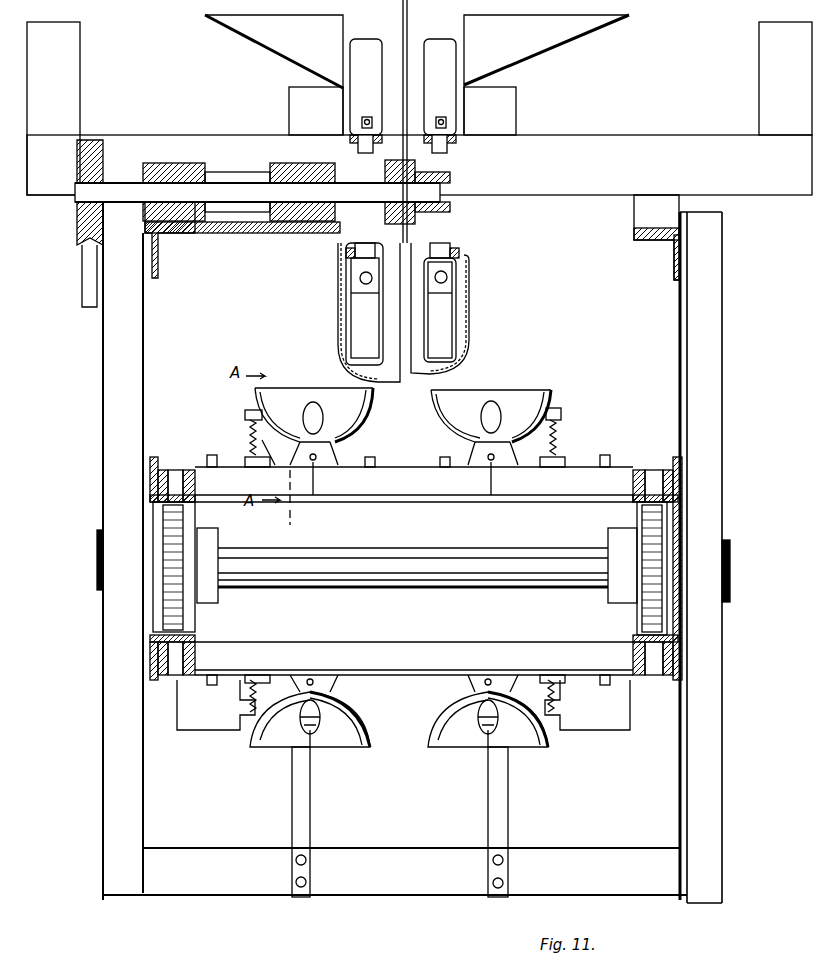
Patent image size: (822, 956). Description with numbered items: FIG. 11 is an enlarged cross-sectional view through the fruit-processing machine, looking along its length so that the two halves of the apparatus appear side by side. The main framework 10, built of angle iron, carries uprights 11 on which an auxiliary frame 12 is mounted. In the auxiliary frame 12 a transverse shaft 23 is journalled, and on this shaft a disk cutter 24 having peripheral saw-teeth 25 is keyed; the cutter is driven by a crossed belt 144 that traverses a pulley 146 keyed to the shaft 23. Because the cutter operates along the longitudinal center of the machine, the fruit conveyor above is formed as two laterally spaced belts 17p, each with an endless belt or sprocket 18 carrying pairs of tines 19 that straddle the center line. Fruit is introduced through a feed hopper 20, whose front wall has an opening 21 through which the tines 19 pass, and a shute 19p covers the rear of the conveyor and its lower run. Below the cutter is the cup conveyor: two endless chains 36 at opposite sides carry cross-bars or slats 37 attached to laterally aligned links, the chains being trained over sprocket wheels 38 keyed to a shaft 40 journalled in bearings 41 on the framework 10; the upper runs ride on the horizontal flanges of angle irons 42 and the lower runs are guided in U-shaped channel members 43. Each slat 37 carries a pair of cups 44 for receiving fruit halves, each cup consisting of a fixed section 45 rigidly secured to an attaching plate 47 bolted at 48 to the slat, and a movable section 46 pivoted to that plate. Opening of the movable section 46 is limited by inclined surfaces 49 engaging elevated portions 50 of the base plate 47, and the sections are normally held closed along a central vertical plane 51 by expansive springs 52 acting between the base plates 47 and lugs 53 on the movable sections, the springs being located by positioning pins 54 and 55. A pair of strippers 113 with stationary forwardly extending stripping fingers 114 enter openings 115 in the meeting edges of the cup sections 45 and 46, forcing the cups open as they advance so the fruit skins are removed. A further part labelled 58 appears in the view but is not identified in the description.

The framework 10 is at (722, 712).
The uprights 11 is at (108, 346).
The auxiliary frame 12 is at (192, 243).
The laterally spaced belts 17p is at (350, 145).
The endless belt or sprocket 18 is at (345, 135).
The tines 19 is at (356, 68).
The shute 19p is at (475, 300).
The feed hopper 20 is at (274, 75).
The opening 21 is at (465, 78).
The shaft 23 is at (255, 233).
The disk cutter 24 is at (410, 33).
The saw-teeth 25 is at (338, 270).
The endless chains 36 is at (150, 490).
The slats 37 is at (463, 495).
The sprocket wheels 38 is at (165, 612).
The shaft 40 is at (437, 590).
The bearings 41 is at (97, 572).
The angle irons 42 is at (150, 520).
The U-shaped channel members 43 is at (150, 662).
The cups 44 is at (556, 402).
The fixed cup sections 45 is at (430, 768).
The movable cup sections 46 is at (600, 748).
The attaching plates 47 is at (325, 660).
The bolts 48 is at (316, 462).
The inclined surfaces 49 is at (298, 440).
The elevated portions 50 is at (313, 470).
The central vertical plane 51 is at (313, 402).
The expansive springs 52 is at (248, 440).
The lugs 53 is at (245, 410).
The positioning pin 54 is at (245, 462).
The positioning pin 55 is at (248, 425).
The base 58 is at (299, 949).
The strippers 113 is at (310, 838).
The stripping fingers 114 is at (360, 712).
The openings 115 is at (350, 425).
The crossed belt 144 is at (82, 296).
The pulley 146 is at (80, 238).